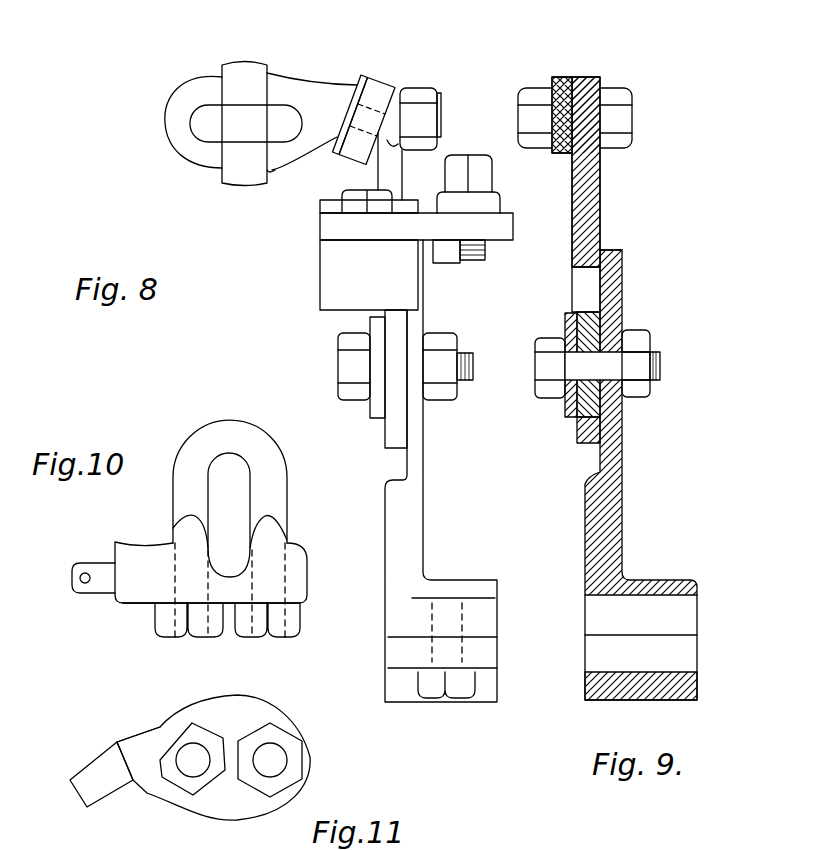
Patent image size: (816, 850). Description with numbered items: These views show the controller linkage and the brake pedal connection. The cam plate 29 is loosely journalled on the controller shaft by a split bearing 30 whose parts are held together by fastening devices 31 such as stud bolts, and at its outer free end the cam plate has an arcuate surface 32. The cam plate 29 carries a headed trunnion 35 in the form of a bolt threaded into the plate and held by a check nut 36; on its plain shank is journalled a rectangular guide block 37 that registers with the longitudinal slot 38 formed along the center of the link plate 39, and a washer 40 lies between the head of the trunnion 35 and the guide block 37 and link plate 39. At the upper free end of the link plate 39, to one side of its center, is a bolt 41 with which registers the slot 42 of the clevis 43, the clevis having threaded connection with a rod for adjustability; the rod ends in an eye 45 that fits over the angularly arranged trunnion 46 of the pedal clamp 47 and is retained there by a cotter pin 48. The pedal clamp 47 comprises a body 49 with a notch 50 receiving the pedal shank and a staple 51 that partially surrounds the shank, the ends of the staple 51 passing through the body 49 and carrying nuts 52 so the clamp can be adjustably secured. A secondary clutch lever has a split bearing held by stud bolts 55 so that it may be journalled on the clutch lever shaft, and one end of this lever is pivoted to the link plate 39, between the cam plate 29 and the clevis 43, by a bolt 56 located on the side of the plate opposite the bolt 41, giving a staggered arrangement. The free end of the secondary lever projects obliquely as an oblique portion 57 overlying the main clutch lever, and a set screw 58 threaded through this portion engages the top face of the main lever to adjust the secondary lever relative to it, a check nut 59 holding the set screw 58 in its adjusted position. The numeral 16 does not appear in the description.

In FIG. 8, the conductor wire 16 is at (402, 155).
In FIG. 8, the cam plate 29 is at (415, 512).
In FIG. 9, the cam plate 29 is at (617, 482).
In FIG. 8, the split bearing 30 is at (490, 648).
In FIG. 9, the split bearing 30 is at (688, 650).
In FIG. 8, the fastening devices 31 is at (465, 690).
In FIG. 9, the arcuate surface 32 is at (607, 250).
In FIG. 8, the headed trunnion 35 is at (337, 365).
In FIG. 9, the headed trunnion 35 is at (547, 383).
In FIG. 8, the check nut 36 is at (457, 337).
In FIG. 9, the check nut 36 is at (643, 333).
In FIG. 9, the rectangular guide block 37 is at (583, 410).
In FIG. 9, the longitudinal slot 38 is at (590, 292).
In FIG. 8, the link plate 39 is at (390, 415).
In FIG. 9, the link plate 39 is at (602, 200).
In FIG. 8, the washer 40 is at (373, 325).
In FIG. 9, the washer 40 is at (567, 317).
In FIG. 8, the bolt 41 is at (437, 113).
In FIG. 9, the bolt 41 is at (593, 115).
In FIG. 9, the slot 42 is at (585, 75).
In FIG. 8, the clevis 43 is at (362, 77).
In FIG. 9, the clevis 43 is at (555, 75).
In FIG. 8, the eye 45 is at (383, 78).
In FIG. 10, the trunnion 46 is at (107, 585).
In FIG. 11, the trunnion 46 is at (107, 795).
In FIG. 8, the pedal clamp 47 is at (267, 172).
In FIG. 10, the pedal clamp 47 is at (155, 598).
In FIG. 11, the pedal clamp 47 is at (153, 728).
In FIG. 8, the cotter pin 48 is at (400, 117).
In FIG. 8, the body 49 is at (207, 165).
In FIG. 10, the body 49 is at (278, 560).
In FIG. 11, the body 49 is at (313, 757).
In FIG. 8, the notch 50 is at (257, 75).
In FIG. 10, the notch 50 is at (237, 553).
In FIG. 8, the staple 51 is at (245, 135).
In FIG. 10, the staple 51 is at (270, 465).
In FIG. 11, the staple 51 is at (188, 765).
In FIG. 10, the nuts 52 is at (250, 623).
In FIG. 11, the nuts 52 is at (273, 732).
In FIG. 8, the stud bolts 55 is at (353, 200).
In FIG. 8, the bolt 56 is at (442, 262).
In FIG. 8, the oblique portion 57 is at (503, 225).
In FIG. 8, the set screw 58 is at (475, 153).
In FIG. 8, the check nut 59 is at (493, 198).